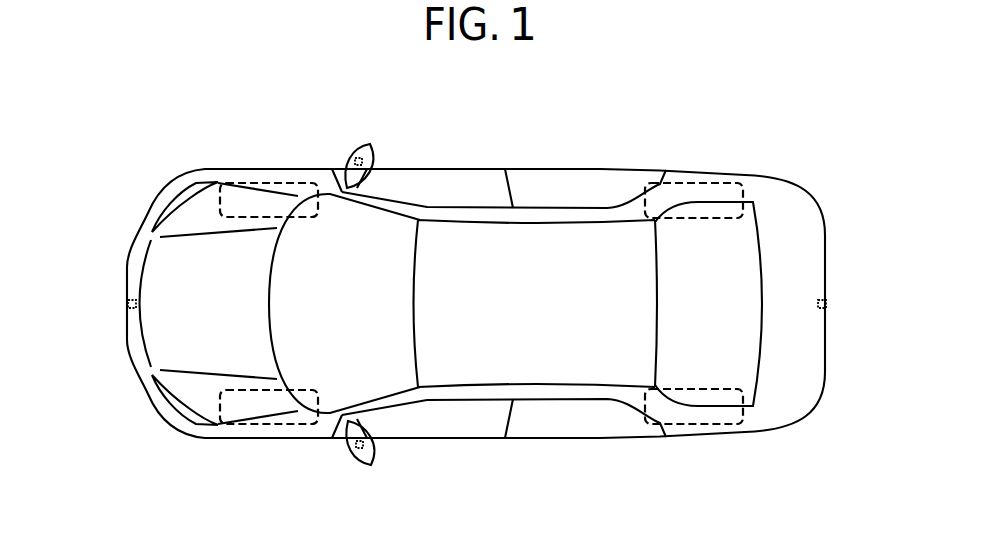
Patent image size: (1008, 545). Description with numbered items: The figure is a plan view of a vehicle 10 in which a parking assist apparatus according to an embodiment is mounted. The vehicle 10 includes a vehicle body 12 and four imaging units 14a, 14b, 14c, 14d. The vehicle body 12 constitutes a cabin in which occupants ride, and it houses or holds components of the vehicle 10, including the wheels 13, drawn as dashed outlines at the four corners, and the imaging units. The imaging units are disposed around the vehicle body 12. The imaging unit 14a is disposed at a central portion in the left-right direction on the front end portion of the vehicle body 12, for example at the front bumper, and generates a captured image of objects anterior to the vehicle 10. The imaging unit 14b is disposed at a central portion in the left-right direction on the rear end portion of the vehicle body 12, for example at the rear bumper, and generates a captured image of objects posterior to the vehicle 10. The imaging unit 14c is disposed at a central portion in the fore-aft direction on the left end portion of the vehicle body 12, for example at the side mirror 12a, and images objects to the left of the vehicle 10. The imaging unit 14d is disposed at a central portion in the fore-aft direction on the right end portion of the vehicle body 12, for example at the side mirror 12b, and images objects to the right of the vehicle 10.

The vehicle 10 is at (515, 131).
The vehicle body 12 is at (617, 170).
The side mirror 12a is at (373, 458).
The side mirror 12b is at (373, 162).
The wheels 13 is at (250, 182).
The imaging unit 14a is at (127, 304).
The imaging unit 14b is at (829, 305).
The imaging unit 14c is at (358, 450).
The imaging unit 14d is at (358, 157).